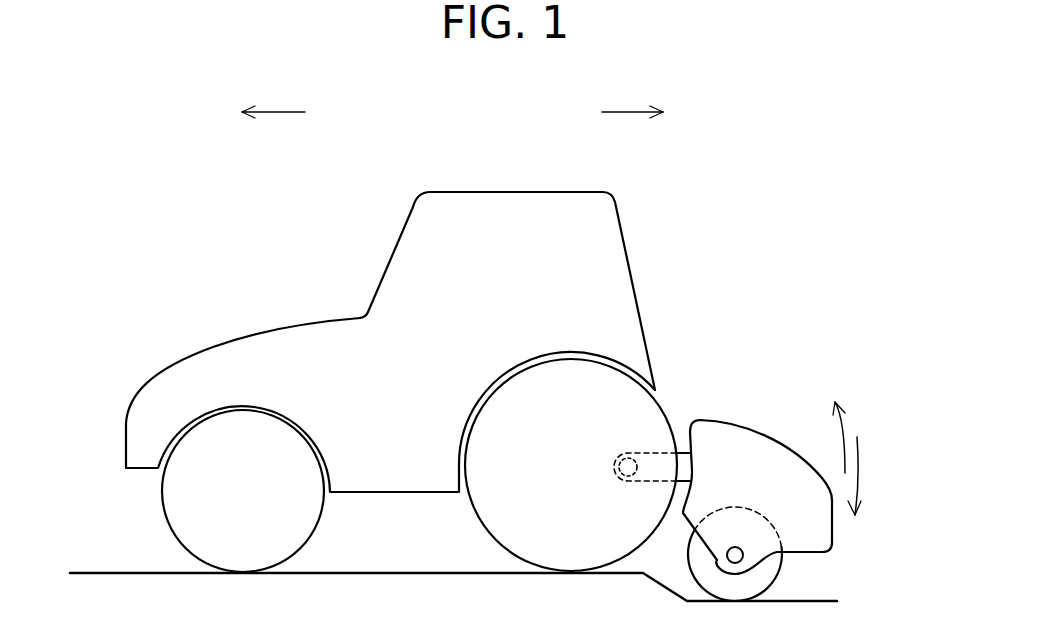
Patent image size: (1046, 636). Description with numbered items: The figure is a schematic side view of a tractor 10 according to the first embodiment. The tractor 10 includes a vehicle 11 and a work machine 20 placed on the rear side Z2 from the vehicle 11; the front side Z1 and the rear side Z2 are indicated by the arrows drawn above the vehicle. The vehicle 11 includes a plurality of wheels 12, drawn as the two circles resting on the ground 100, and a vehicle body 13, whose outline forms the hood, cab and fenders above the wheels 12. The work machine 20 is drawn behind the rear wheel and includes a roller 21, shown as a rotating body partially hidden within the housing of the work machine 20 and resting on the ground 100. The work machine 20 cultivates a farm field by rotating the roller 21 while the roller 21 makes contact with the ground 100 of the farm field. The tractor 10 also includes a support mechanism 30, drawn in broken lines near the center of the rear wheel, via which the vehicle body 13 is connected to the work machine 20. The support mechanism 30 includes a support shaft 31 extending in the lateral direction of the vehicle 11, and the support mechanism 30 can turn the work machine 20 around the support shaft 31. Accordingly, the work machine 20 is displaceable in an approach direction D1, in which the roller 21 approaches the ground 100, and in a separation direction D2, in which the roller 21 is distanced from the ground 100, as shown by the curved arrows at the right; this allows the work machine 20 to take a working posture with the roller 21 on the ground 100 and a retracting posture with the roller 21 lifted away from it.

The tractor 10 is at (391, 351).
The vehicle 11 is at (350, 283).
The wheels 12 is at (167, 512).
The vehicle body 13 is at (215, 345).
The work machine 20 is at (757, 471).
The roller 21 is at (763, 575).
The support mechanism 30 is at (622, 425).
The support shaft 31 is at (613, 439).
The ground 100 is at (377, 572).
The front side Z1 is at (275, 112).
The rear side Z2 is at (633, 112).
The approach direction D1 is at (858, 468).
The separation direction D2 is at (842, 430).